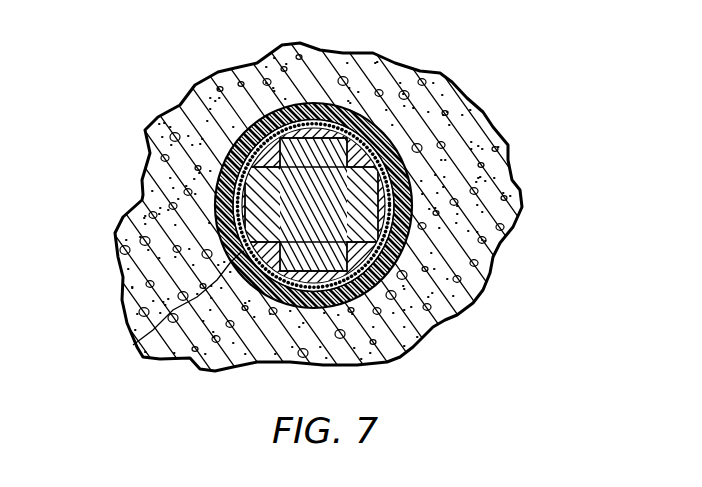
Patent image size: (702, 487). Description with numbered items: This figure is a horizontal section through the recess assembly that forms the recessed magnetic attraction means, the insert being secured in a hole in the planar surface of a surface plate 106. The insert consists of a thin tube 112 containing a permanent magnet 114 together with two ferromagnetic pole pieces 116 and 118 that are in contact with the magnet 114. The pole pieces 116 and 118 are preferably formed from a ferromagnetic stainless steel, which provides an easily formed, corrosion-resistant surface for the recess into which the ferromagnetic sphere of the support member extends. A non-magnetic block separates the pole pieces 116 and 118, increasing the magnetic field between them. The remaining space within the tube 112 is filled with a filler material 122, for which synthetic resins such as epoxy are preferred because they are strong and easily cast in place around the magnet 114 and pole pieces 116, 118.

The surface plate 106 is at (512, 146).
The thin tube 112 is at (402, 245).
The permanent magnet 114 is at (330, 107).
The ferromagnetic pole piece 116 is at (220, 173).
The ferromagnetic pole piece 118 is at (352, 152).
The filler material 122 is at (133, 345).